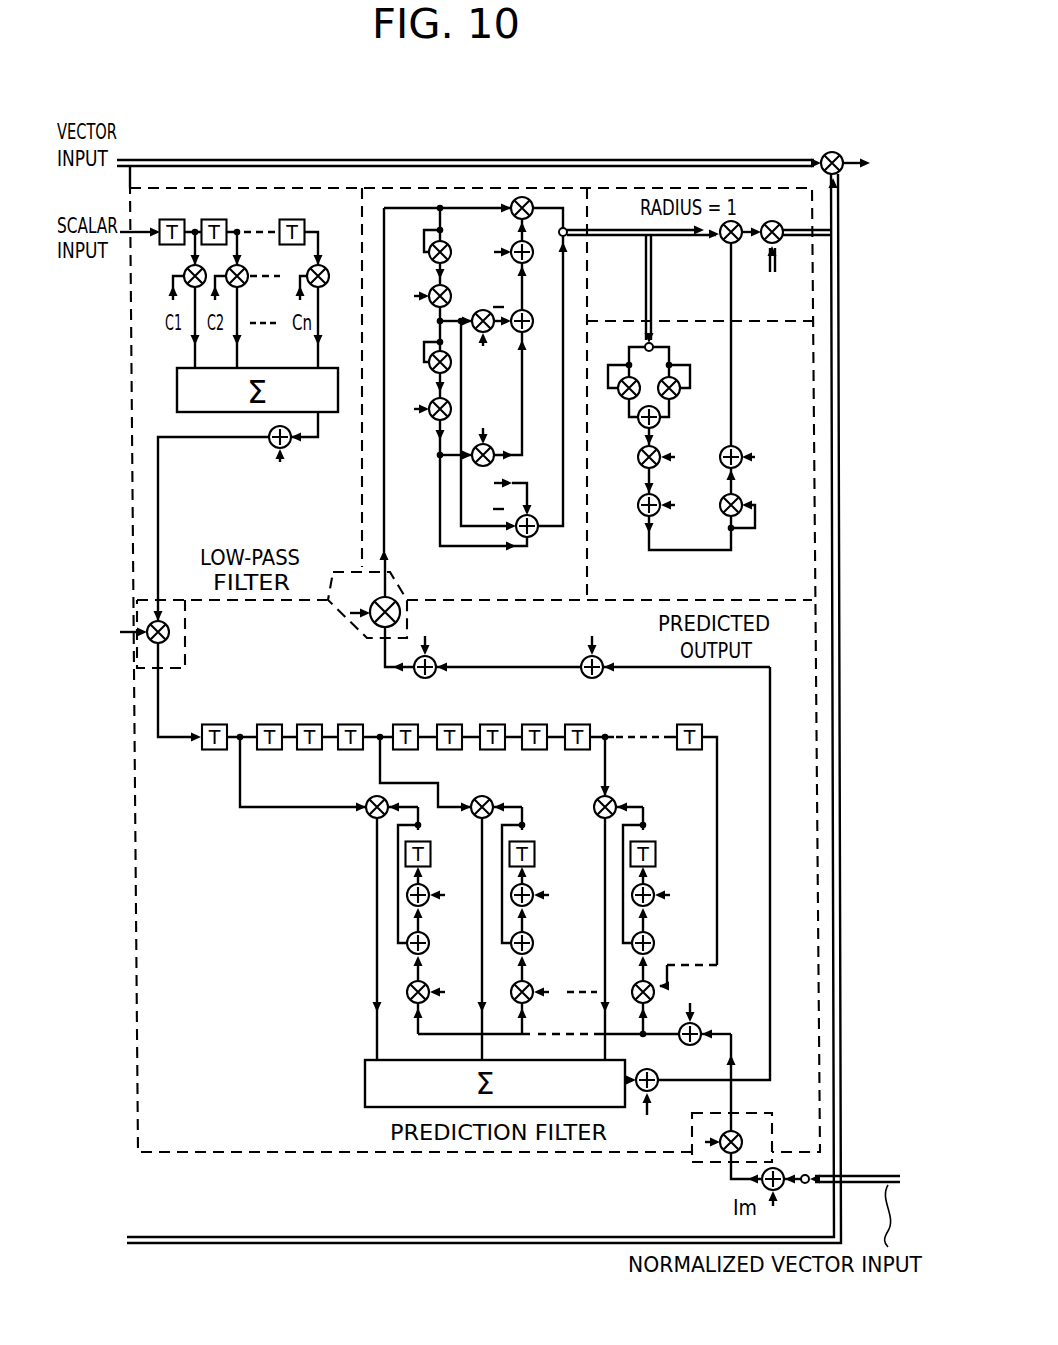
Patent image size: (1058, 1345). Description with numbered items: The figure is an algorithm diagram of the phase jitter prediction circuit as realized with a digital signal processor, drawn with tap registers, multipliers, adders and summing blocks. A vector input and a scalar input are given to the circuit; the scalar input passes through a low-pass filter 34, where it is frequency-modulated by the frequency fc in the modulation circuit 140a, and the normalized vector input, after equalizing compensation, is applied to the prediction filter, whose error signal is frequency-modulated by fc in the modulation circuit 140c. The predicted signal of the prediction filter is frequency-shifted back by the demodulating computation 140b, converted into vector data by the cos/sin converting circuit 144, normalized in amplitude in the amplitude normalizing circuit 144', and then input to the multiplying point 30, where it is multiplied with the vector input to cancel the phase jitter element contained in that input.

The multiplying point 30 is at (832, 151).
The low-pass filter 34 is at (124, 362).
The modulation circuit 140a is at (137, 661).
The demodulation circuit 140b is at (358, 637).
The modulation circuit 140c is at (707, 1163).
The cos/sin converting circuit 144 is at (596, 358).
The amplitude normalizing circuit 144' is at (709, 358).